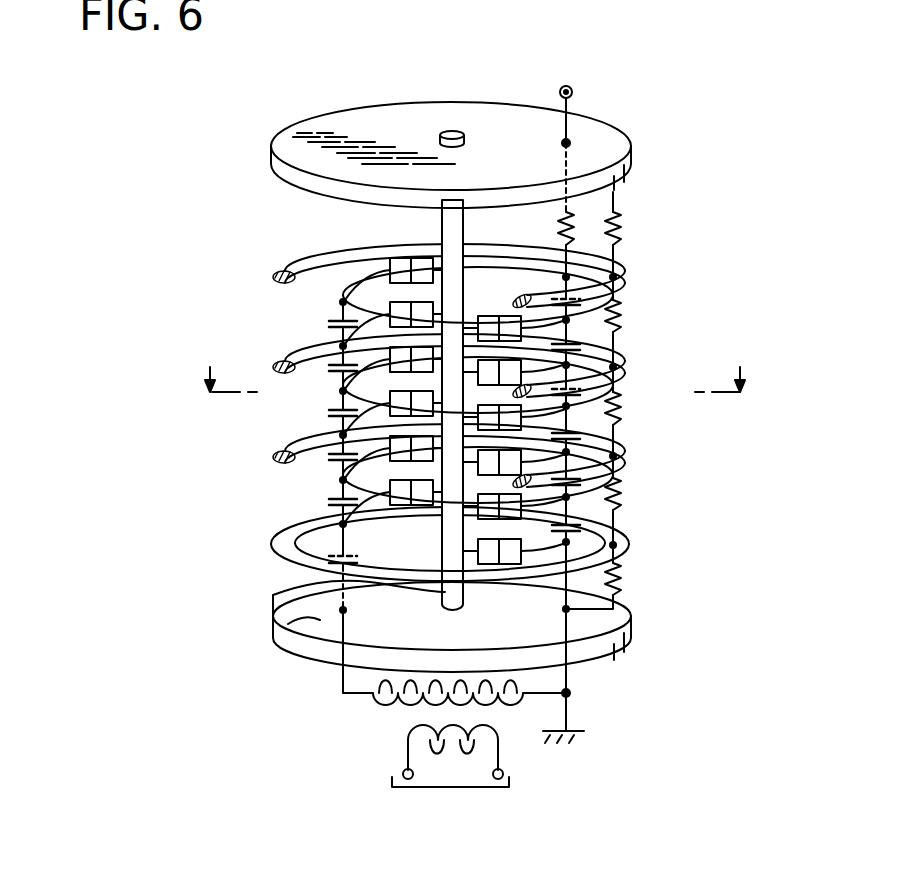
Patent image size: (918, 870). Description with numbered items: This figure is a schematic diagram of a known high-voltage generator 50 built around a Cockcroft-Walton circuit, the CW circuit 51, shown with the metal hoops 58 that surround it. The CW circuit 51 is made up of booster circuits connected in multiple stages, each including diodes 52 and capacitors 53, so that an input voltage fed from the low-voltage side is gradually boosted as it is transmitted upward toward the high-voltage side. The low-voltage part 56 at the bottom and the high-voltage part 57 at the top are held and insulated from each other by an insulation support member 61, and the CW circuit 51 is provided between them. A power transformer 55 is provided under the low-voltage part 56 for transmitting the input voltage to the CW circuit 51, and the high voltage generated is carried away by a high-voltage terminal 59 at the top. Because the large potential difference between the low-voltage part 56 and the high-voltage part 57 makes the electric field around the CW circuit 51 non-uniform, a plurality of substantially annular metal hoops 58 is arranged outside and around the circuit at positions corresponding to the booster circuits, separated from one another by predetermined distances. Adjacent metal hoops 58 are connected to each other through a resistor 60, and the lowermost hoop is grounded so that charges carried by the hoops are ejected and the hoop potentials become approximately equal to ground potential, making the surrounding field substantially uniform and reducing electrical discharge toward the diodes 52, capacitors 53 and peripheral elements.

The high-voltage generator 50 is at (488, 72).
The CW circuit 51 is at (349, 279).
The diode 52 is at (405, 488).
The capacitor 53 is at (340, 503).
The power transformer 55 is at (385, 720).
The low-voltage part 56 is at (320, 622).
The high-voltage part 57 is at (375, 132).
The metal hoop 58 is at (628, 280).
The output terminal 59 is at (575, 91).
The resistor 60 is at (613, 212).
The insulation support member 61 is at (335, 577).